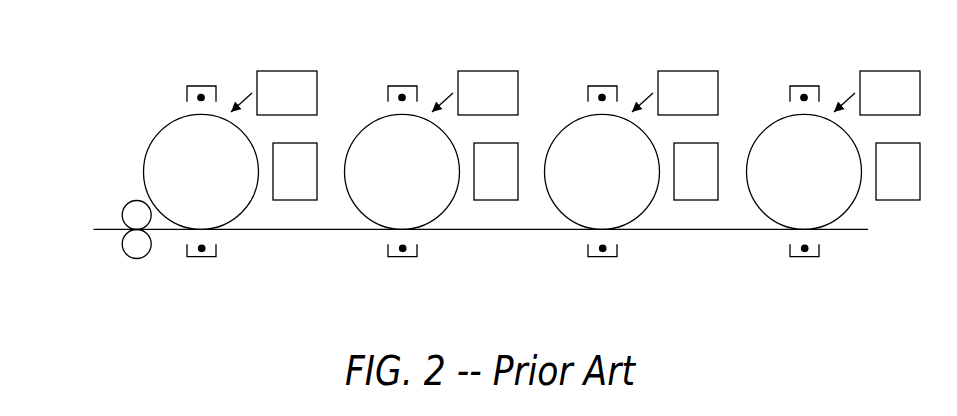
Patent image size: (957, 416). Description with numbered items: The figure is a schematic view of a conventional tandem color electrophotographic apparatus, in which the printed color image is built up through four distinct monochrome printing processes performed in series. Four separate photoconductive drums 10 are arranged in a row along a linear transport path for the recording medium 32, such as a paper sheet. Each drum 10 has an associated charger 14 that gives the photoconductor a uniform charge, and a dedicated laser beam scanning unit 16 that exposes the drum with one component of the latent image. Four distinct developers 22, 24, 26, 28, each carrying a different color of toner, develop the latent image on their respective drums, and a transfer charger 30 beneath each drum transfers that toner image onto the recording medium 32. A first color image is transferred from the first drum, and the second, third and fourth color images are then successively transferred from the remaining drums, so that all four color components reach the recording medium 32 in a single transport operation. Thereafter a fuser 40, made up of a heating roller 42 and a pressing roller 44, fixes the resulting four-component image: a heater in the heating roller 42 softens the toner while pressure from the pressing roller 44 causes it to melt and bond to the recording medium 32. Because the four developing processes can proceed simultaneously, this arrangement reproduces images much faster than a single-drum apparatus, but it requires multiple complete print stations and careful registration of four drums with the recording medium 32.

The photoconductive drum 10 is at (189, 184).
The charger 14 is at (199, 86).
The laser beam scanning unit 16 is at (284, 82).
The developer 22 is at (898, 201).
The developer 24 is at (695, 201).
The developer 26 is at (496, 201).
The developer 28 is at (295, 201).
The transfer charger 30 is at (203, 258).
The recording medium 32 is at (861, 233).
The fuser 40 is at (106, 257).
The heating roller 42 is at (129, 212).
The pressing roller 44 is at (130, 250).